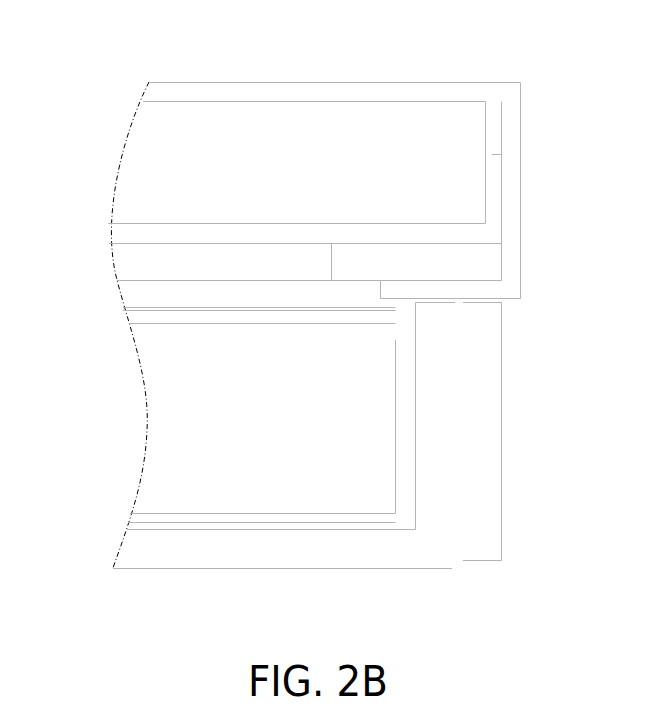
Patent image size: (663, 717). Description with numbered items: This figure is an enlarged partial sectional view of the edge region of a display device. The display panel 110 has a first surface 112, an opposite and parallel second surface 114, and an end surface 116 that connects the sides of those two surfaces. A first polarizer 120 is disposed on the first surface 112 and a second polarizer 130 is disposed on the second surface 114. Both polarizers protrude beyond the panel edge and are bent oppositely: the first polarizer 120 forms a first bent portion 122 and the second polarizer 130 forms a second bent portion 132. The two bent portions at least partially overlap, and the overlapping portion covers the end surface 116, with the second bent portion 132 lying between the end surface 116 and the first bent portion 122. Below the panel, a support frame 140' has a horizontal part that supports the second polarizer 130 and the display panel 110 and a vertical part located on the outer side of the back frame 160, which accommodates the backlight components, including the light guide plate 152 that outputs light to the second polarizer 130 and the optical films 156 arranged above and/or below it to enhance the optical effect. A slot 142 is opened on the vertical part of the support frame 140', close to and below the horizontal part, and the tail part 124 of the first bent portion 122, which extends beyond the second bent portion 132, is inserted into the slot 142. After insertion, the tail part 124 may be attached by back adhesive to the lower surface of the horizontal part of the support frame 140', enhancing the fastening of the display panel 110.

The display panel 110 is at (228, 132).
The first surface 112 is at (178, 102).
The second surface 114 is at (140, 223).
The end surface 116 is at (501, 118).
The first polarizer 120 is at (360, 92).
The first bent portion 122 is at (510, 175).
The tail part 124 is at (402, 298).
The second polarizer 130 is at (287, 237).
The second bent portion 132 is at (493, 154).
The support frame 140' is at (520, 441).
The slot 142 is at (503, 300).
The light guide plate 152 is at (252, 465).
The optical films 156 is at (150, 522).
The back frame 160 is at (420, 568).